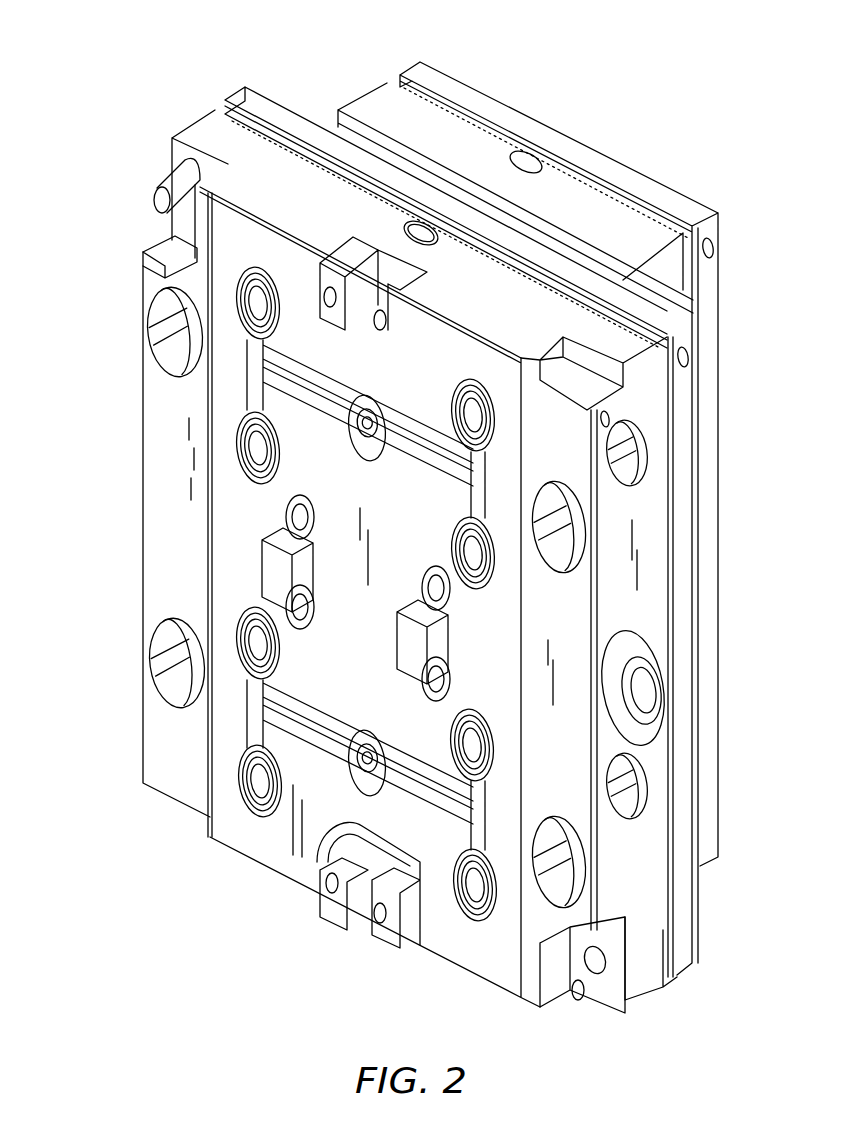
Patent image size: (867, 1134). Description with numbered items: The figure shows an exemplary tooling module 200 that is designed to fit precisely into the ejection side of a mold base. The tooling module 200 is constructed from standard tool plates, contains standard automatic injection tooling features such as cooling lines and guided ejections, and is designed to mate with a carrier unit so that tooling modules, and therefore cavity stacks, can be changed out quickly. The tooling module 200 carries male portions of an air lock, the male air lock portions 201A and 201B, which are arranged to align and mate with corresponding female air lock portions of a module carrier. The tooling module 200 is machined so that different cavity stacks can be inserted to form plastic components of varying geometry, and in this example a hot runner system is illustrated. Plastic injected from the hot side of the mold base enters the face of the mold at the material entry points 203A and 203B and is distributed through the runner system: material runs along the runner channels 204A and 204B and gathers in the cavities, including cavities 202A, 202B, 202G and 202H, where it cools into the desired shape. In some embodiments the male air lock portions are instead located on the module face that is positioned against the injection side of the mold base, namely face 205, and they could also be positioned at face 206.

The tooling module 200 is at (274, 48).
The male air lock portion 201A is at (575, 997).
The male air lock portion 201B is at (148, 210).
The cavity 202A is at (240, 300).
The cavity 202B is at (471, 412).
The cavity 202G is at (262, 787).
The cavity 202H is at (462, 905).
The material entry point 203A is at (368, 400).
The material entry point 203B is at (365, 780).
The runner channel 204A is at (262, 372).
The runner channel 204B is at (262, 712).
The face 205 is at (552, 128).
The face 206 is at (668, 307).